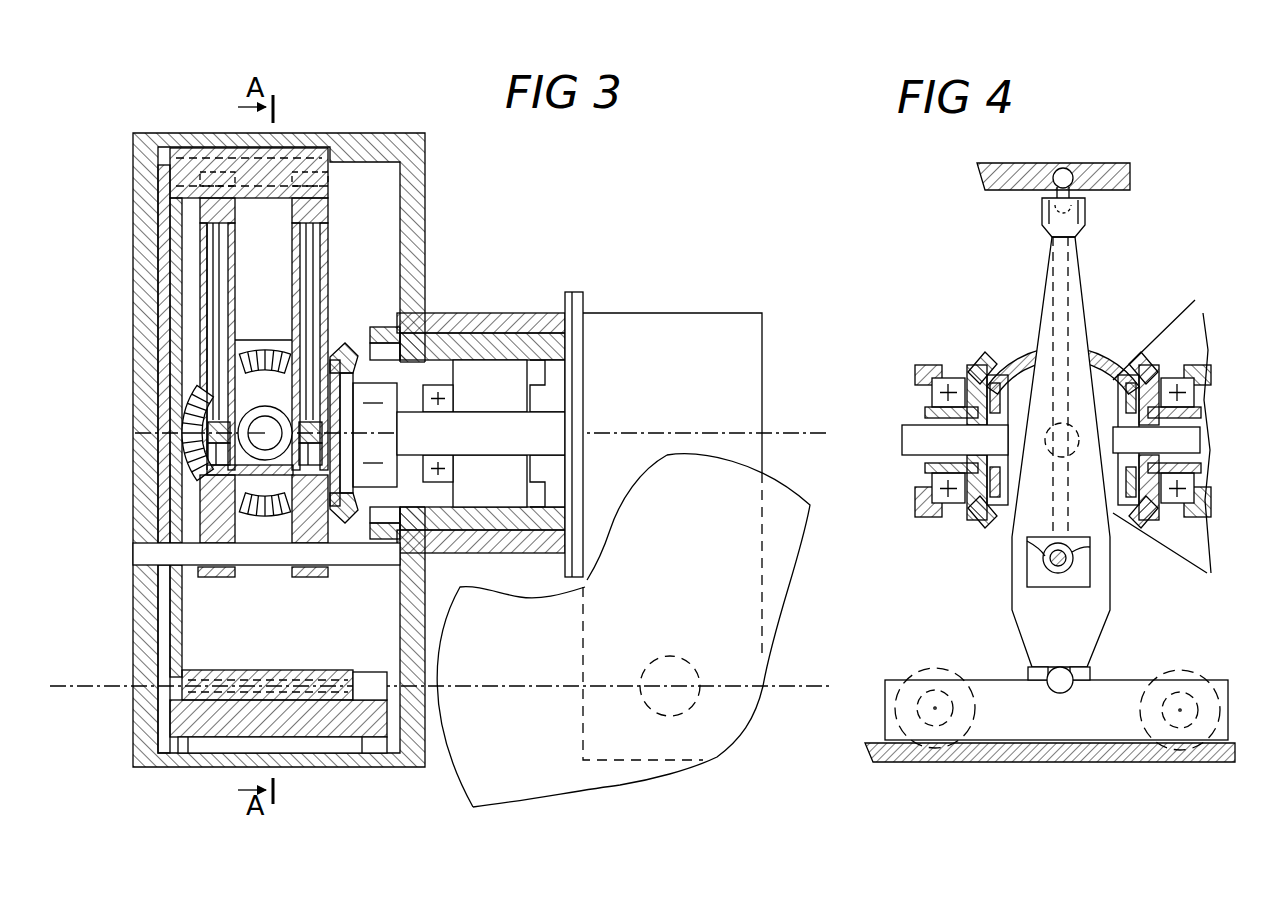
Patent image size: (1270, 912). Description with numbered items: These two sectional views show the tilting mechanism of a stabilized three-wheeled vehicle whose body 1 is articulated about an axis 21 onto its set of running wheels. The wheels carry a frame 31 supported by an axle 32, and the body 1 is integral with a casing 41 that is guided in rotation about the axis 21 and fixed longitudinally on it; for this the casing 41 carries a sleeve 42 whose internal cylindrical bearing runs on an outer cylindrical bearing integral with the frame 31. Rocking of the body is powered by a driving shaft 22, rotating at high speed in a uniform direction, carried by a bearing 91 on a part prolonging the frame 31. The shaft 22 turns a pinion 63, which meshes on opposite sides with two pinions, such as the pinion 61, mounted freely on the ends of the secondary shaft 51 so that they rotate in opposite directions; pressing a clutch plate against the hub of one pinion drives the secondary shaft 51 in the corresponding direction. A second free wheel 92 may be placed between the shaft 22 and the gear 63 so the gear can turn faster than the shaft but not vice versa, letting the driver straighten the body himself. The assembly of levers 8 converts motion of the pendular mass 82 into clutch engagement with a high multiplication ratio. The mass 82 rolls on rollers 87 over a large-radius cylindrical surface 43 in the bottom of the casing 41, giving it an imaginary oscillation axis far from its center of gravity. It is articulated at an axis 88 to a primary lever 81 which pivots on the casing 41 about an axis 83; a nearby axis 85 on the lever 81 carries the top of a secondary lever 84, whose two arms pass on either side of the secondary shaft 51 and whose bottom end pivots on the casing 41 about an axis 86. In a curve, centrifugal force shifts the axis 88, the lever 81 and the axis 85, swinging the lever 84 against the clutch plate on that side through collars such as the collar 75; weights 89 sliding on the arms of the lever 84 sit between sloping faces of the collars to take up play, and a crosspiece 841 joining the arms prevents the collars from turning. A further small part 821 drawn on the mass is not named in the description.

In FIG. 3, the body 1 is at (778, 690).
In FIG. 3, the set of levers 8 is at (240, 242).
In FIG. 3, the axis of articulation 21 is at (600, 433).
In FIG. 3, the driving shaft 22 is at (487, 423).
In FIG. 3, the frame 31 is at (650, 353).
In FIG. 3, the axle 32 is at (640, 687).
In FIG. 3, the casing 41 is at (368, 132).
In FIG. 4, the casing 41 is at (1034, 160).
In FIG. 3, the sleeve 42 is at (468, 313).
In FIG. 4, the cylindrical surface 43 is at (875, 745).
In FIG. 3, the secondary shaft 51 is at (200, 395).
In FIG. 3, the pinion 61 is at (250, 350).
In FIG. 3, the pinion 63 is at (343, 347).
In FIG. 3, the collar 75 is at (215, 418).
In FIG. 3, the primary lever 81 is at (165, 598).
In FIG. 4, the primary lever 81 is at (1075, 293).
In FIG. 3, the pendular mass 82 is at (190, 713).
In FIG. 4, the pendular mass 82 is at (1015, 705).
In FIG. 4, the tab 821 is at (1010, 640).
In FIG. 3, the axis 83 is at (200, 152).
In FIG. 4, the axis 83 is at (1065, 168).
In FIG. 3, the secondary lever 84 is at (205, 268).
In FIG. 4, the secondary lever 84 is at (1060, 257).
In FIG. 3, the axis of articulation 85 is at (181, 192).
In FIG. 4, the axis of articulation 85 is at (1082, 200).
In FIG. 3, the axis 86 is at (160, 553).
In FIG. 4, the axis 86 is at (1044, 558).
In FIG. 3, the rollers 87 is at (165, 748).
In FIG. 4, the rollers 87 is at (925, 672).
In FIG. 3, the axis 88 is at (250, 670).
In FIG. 4, the axis 88 is at (1065, 693).
In FIG. 3, the weights 89 is at (228, 470).
In FIG. 4, the weights 89 is at (1090, 370).
In FIG. 3, the crosspiece 841 is at (225, 495).
In FIG. 3, the bearing 91 is at (548, 400).
In FIG. 3, the second free wheel 92 is at (375, 328).